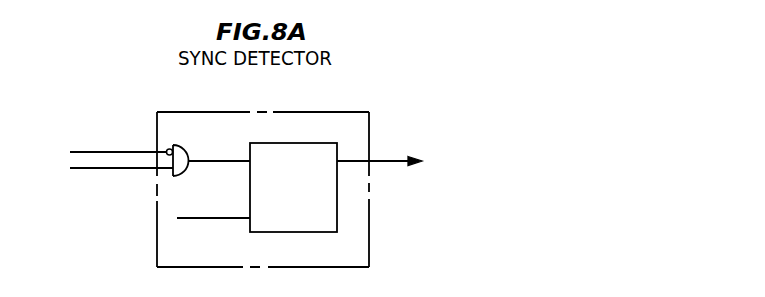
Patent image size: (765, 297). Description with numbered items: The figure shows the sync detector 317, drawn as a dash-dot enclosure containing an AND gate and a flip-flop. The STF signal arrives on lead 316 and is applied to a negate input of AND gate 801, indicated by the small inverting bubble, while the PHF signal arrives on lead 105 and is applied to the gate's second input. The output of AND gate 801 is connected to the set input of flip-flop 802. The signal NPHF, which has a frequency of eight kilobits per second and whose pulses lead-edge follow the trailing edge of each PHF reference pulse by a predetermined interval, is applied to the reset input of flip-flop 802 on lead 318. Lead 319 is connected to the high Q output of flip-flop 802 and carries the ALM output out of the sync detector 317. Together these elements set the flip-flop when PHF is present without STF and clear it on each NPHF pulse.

The sync detector 317 is at (369, 240).
The lead carrying STF signal 316 is at (120, 151).
The lead carrying PHF signal 105 is at (120, 169).
The AND gate 801 is at (186, 150).
The flip-flop 802 is at (270, 232).
The lead carrying NPHF signal 318 is at (197, 219).
The output lead 319 is at (389, 162).